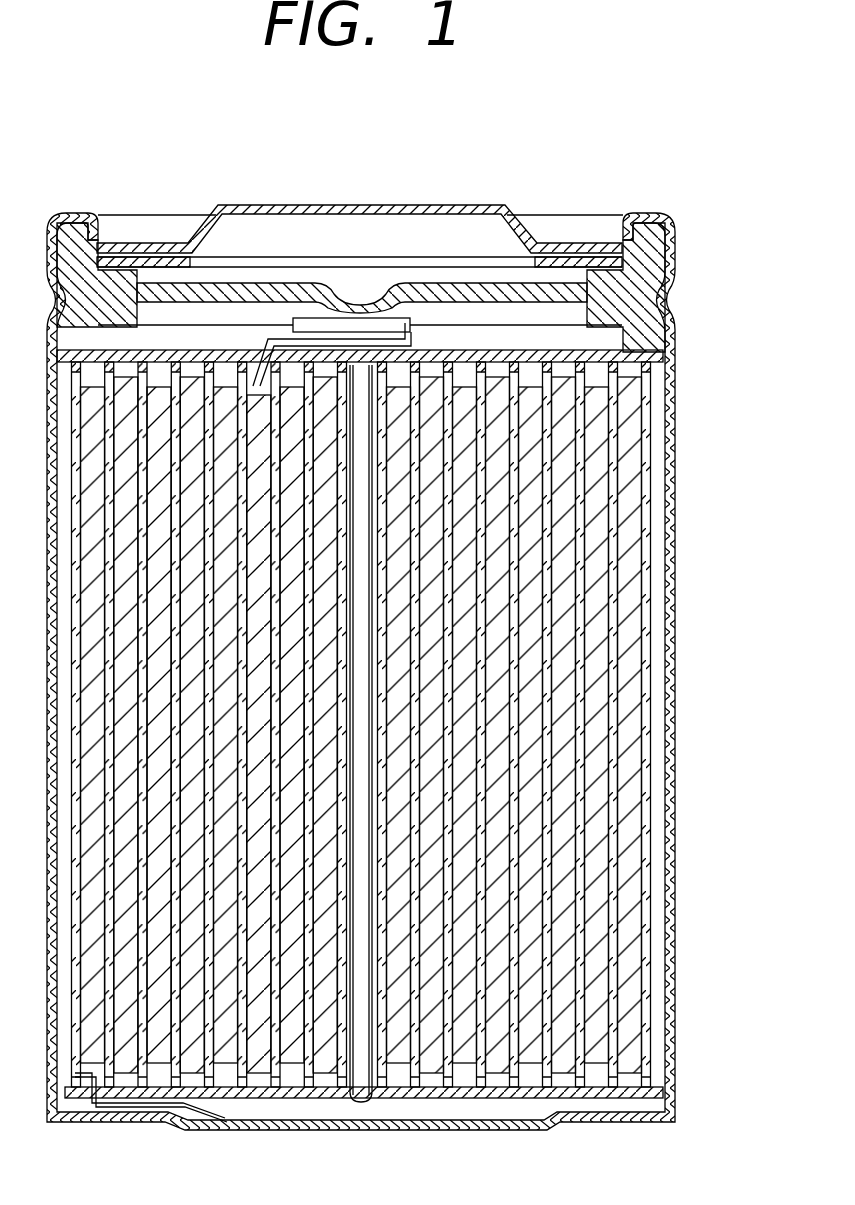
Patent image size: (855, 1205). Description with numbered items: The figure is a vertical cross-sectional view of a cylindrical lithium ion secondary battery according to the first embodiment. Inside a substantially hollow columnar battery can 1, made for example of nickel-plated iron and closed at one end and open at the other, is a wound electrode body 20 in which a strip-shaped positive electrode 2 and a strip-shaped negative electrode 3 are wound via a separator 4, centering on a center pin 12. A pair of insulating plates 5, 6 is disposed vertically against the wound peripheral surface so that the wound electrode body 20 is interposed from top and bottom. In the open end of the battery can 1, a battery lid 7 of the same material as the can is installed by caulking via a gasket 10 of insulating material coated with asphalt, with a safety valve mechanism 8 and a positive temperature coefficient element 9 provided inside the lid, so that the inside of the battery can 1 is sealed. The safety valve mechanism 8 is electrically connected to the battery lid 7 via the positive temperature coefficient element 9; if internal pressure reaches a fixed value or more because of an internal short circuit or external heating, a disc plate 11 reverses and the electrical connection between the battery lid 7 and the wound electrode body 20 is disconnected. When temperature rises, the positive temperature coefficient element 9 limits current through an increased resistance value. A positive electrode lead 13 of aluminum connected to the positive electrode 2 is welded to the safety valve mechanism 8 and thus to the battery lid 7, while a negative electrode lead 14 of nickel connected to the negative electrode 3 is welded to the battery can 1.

The battery can 1 is at (672, 432).
The positive electrode 2 is at (598, 633).
The negative electrode 3 is at (628, 687).
The separator 4 is at (612, 733).
The insulating plate 5 is at (665, 353).
The insulating plate 6 is at (612, 1087).
The battery lid 7 is at (345, 205).
The safety valve mechanism 8 is at (483, 256).
The positive temperature coefficient element 9 is at (662, 258).
The gasket 10 is at (672, 318).
The disc plate 11 is at (443, 300).
The center pin 12 is at (360, 808).
The positive electrode lead 13 is at (318, 330).
The negative electrode lead 14 is at (210, 1115).
The wound electrode body 20 is at (663, 533).